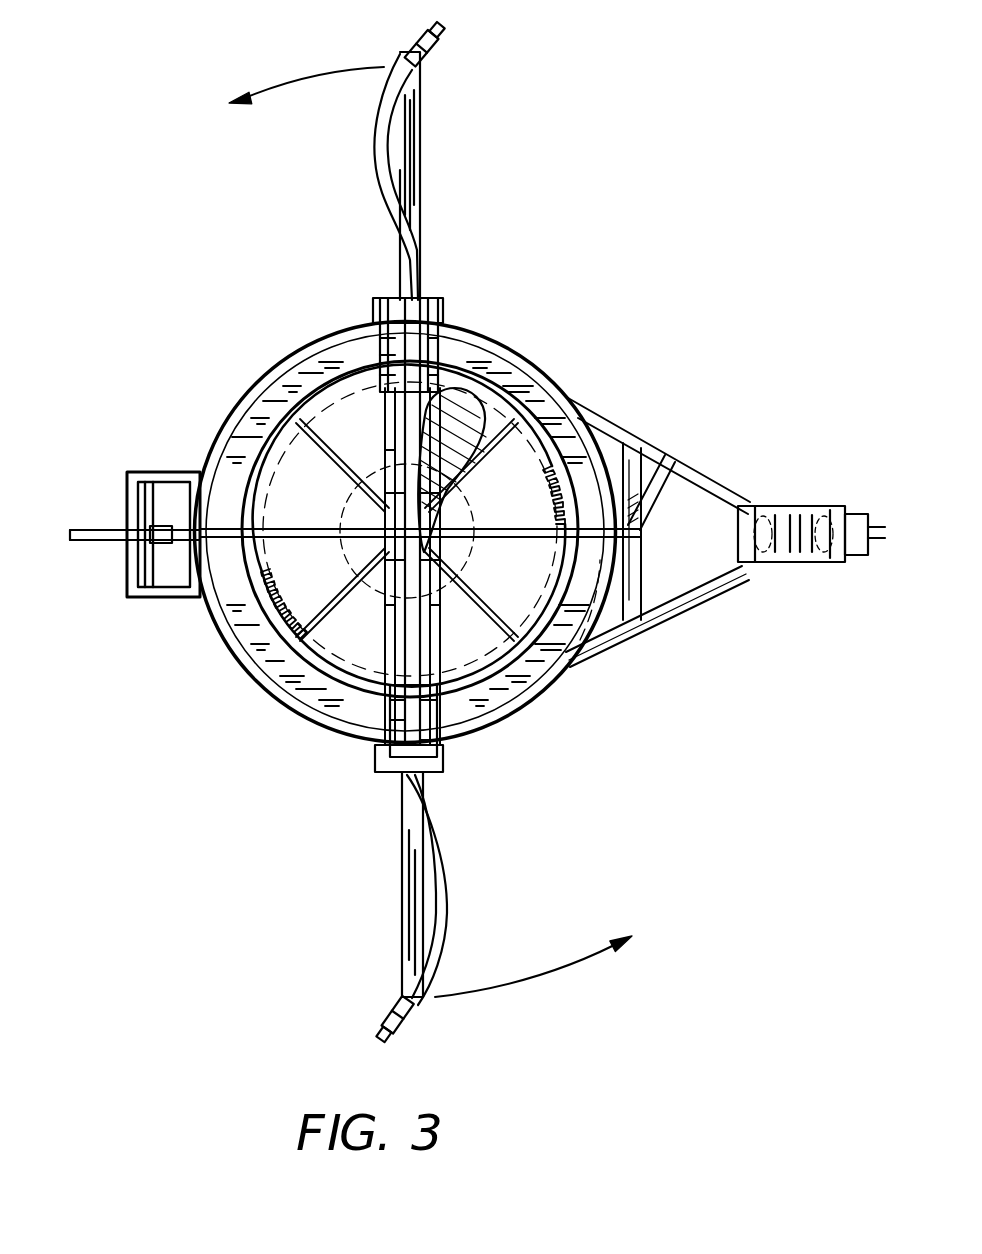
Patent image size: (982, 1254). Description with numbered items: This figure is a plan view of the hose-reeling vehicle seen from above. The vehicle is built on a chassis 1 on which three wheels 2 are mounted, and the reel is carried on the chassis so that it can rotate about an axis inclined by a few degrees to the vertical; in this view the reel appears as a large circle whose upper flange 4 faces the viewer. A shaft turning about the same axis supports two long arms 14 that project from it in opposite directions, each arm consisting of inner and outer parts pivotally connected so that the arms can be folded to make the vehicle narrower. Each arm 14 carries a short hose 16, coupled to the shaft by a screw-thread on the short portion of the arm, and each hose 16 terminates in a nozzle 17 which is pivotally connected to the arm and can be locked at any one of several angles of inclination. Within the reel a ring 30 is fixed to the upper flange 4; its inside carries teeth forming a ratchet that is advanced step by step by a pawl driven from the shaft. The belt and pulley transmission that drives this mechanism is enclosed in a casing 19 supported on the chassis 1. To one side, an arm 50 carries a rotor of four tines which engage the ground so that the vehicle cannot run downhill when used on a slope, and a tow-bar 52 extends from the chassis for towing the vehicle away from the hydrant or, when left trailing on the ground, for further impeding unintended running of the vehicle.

The chassis 1 is at (388, 622).
The wheels 2 is at (356, 345).
The upper flange 4 is at (503, 698).
The arms 14 is at (420, 152).
The short hose 16 is at (378, 162).
The nozzles 17 is at (440, 32).
The casing 19 is at (470, 385).
The ring 30 is at (572, 432).
The arm 50 is at (171, 598).
The tow-bar 52 is at (108, 532).